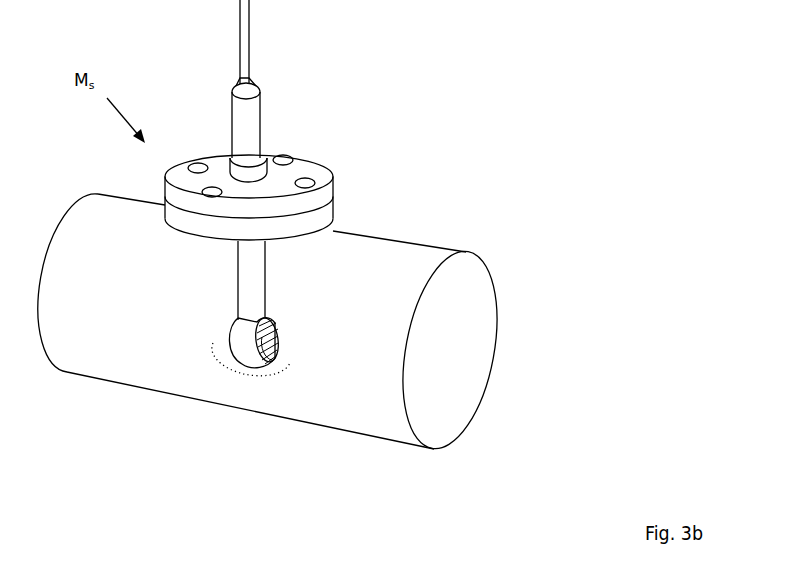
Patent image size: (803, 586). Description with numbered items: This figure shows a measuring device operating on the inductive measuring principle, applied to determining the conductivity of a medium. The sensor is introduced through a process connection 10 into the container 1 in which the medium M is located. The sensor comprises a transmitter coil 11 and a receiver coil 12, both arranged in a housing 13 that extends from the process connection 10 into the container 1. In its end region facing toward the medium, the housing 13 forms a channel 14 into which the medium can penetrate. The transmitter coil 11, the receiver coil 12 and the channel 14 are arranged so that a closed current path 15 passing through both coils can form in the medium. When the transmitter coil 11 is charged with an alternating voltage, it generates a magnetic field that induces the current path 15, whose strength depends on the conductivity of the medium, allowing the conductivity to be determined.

The container 1 is at (477, 311).
The process connection 10 is at (298, 172).
The transmitter coil 11 is at (277, 331).
The receiver coil 12 is at (230, 338).
The housing 13 is at (263, 252).
The channel 14 is at (265, 350).
The closed current path 15 is at (263, 388).